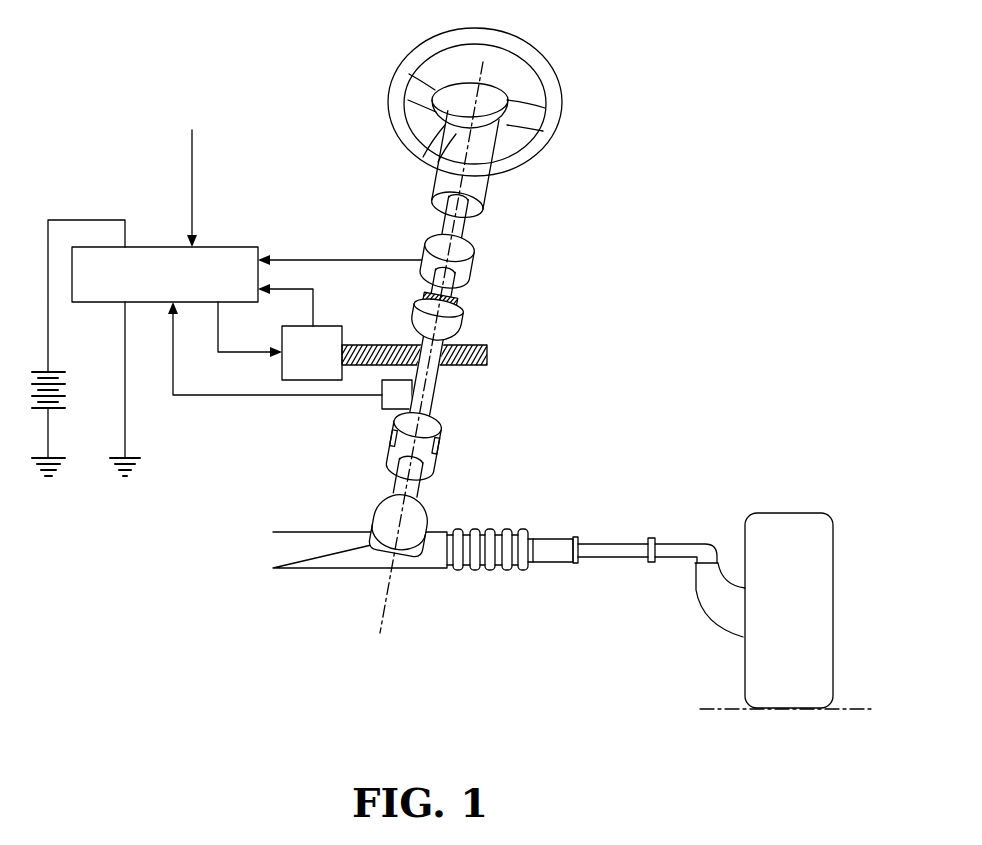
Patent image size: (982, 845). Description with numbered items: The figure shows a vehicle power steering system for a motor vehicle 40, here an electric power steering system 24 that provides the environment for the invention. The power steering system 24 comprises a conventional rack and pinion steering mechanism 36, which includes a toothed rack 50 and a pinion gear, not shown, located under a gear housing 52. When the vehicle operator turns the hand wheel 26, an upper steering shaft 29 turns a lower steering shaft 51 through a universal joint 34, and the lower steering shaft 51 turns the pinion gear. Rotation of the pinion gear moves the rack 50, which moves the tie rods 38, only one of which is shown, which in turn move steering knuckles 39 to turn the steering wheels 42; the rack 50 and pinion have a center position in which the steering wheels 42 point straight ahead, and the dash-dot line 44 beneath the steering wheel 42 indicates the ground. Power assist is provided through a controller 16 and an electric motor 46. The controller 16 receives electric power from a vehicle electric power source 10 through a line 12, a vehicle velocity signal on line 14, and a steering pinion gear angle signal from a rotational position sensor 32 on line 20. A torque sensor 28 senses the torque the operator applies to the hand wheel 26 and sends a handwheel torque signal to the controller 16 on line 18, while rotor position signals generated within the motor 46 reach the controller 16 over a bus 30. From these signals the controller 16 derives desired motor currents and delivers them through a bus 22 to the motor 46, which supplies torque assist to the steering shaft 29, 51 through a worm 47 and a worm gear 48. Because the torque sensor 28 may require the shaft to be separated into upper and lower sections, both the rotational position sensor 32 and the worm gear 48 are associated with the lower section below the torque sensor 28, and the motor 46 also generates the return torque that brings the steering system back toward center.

The vehicle electric power source 10 is at (50, 372).
The line 12 is at (68, 220).
The line 14 is at (192, 170).
The controller 16 is at (158, 253).
The line 18 is at (320, 260).
The line 20 is at (188, 395).
The bus 22 is at (232, 353).
The power steering system 24 is at (643, 228).
The hand wheel 26 is at (530, 58).
The torque sensor 28 is at (432, 250).
The upper steering shaft 29 is at (460, 208).
The bus 30 is at (313, 302).
The rotational position sensor 32 is at (382, 403).
The universal joint 34 is at (437, 440).
The rack and pinion steering mechanism 36 is at (493, 587).
The tie rod 38 is at (608, 550).
The steering knuckle 39 is at (727, 612).
The motor vehicle 40 is at (716, 370).
The steering wheel 42 is at (797, 522).
The road surface 44 is at (847, 712).
The electric motor 46 is at (335, 330).
The worm 47 is at (475, 353).
The worm gear 48 is at (455, 320).
The toothed rack 50 is at (323, 560).
The lower steering shaft 51 is at (412, 490).
The gear housing 52 is at (387, 515).